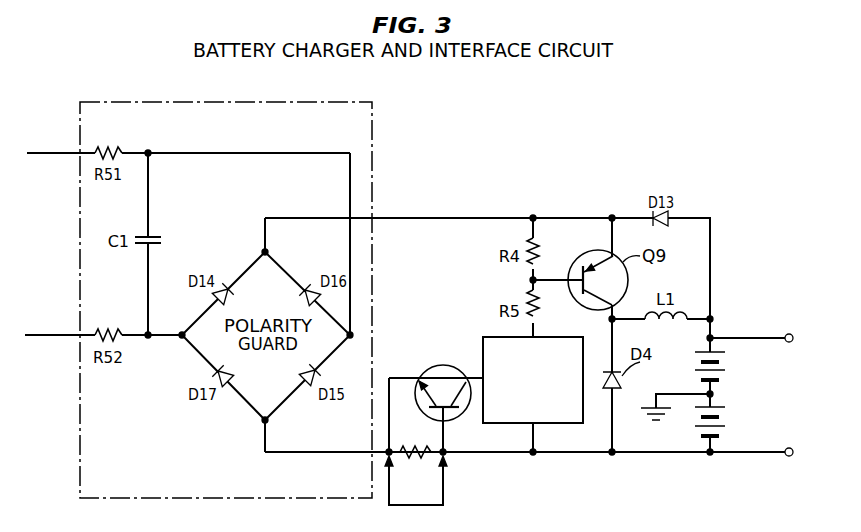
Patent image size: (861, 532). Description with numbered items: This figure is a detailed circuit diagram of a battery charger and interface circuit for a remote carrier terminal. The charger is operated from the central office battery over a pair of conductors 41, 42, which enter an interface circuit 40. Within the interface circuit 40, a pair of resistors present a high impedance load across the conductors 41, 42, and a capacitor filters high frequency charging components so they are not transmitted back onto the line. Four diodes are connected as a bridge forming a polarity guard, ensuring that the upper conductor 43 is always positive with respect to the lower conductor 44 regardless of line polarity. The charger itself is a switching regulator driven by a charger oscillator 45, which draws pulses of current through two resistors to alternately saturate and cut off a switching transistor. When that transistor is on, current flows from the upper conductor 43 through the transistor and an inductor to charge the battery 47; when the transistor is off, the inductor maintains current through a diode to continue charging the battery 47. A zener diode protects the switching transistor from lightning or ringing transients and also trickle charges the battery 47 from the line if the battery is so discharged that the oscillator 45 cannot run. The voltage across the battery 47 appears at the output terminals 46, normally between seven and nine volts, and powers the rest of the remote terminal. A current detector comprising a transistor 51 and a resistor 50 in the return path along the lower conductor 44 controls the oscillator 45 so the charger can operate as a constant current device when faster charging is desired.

The interface circuit 40 is at (96, 102).
The conductor 41 is at (38, 156).
The conductor 42 is at (42, 338).
The upper conductor 43 is at (461, 218).
The lower conductor 44 is at (541, 455).
The oscillator 45 is at (571, 423).
The terminals 46 is at (789, 344).
The battery 47 is at (724, 374).
The resistor 50 is at (416, 475).
The transistor 51 is at (439, 368).